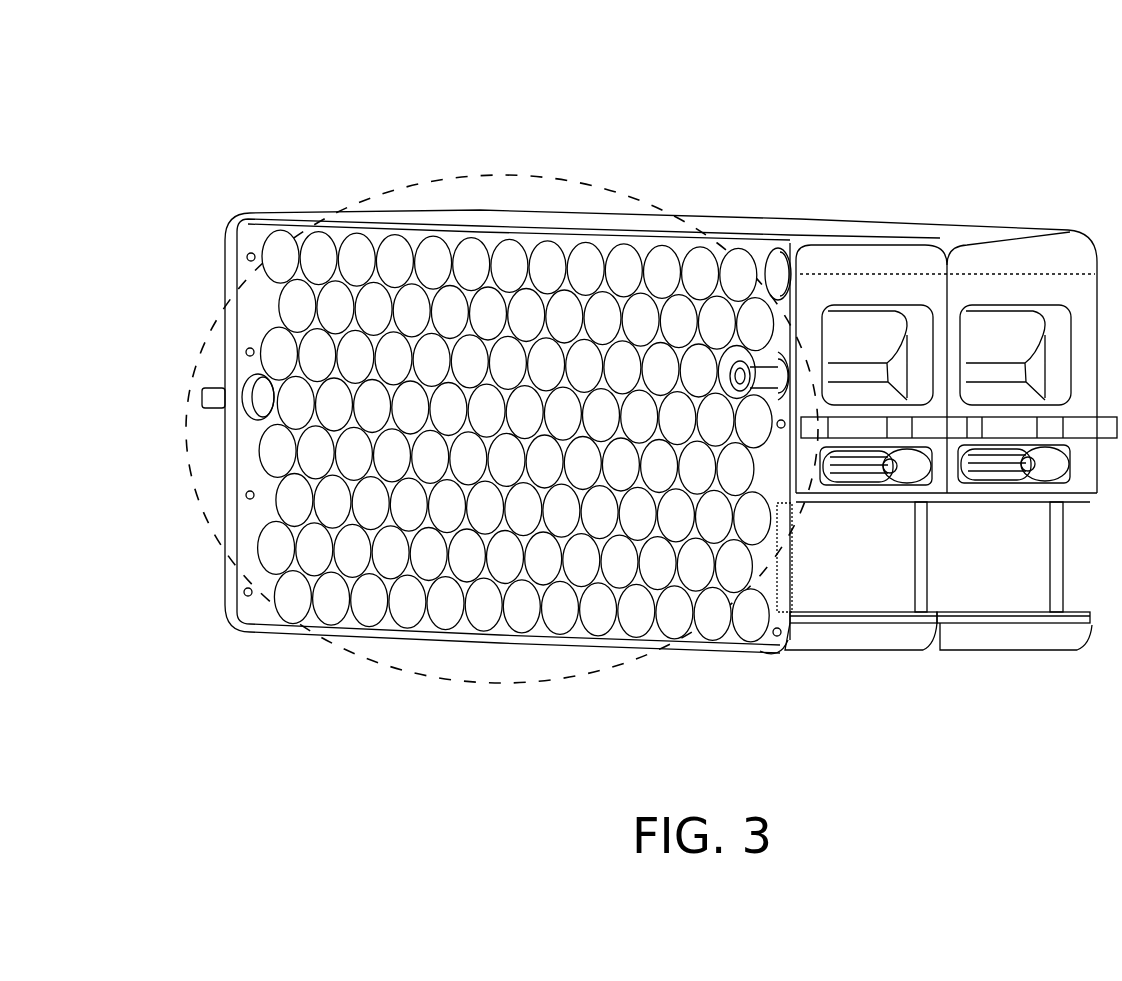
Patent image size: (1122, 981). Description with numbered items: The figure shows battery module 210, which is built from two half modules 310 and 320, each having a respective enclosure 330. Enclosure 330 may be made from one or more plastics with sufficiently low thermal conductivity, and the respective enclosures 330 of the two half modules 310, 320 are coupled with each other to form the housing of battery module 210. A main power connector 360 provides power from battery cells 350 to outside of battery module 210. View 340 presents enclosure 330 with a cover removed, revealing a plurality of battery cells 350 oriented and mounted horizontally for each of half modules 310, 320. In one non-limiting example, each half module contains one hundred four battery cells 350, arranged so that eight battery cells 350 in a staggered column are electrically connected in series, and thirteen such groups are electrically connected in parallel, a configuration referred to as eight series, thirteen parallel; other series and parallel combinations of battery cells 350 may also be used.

The battery module 210 is at (262, 70).
The half module 310 is at (777, 667).
The half module 320 is at (937, 667).
The enclosure 330 is at (1005, 258).
The view 340 is at (446, 684).
The battery cells 350 is at (587, 276).
The main power connector 360 is at (760, 382).